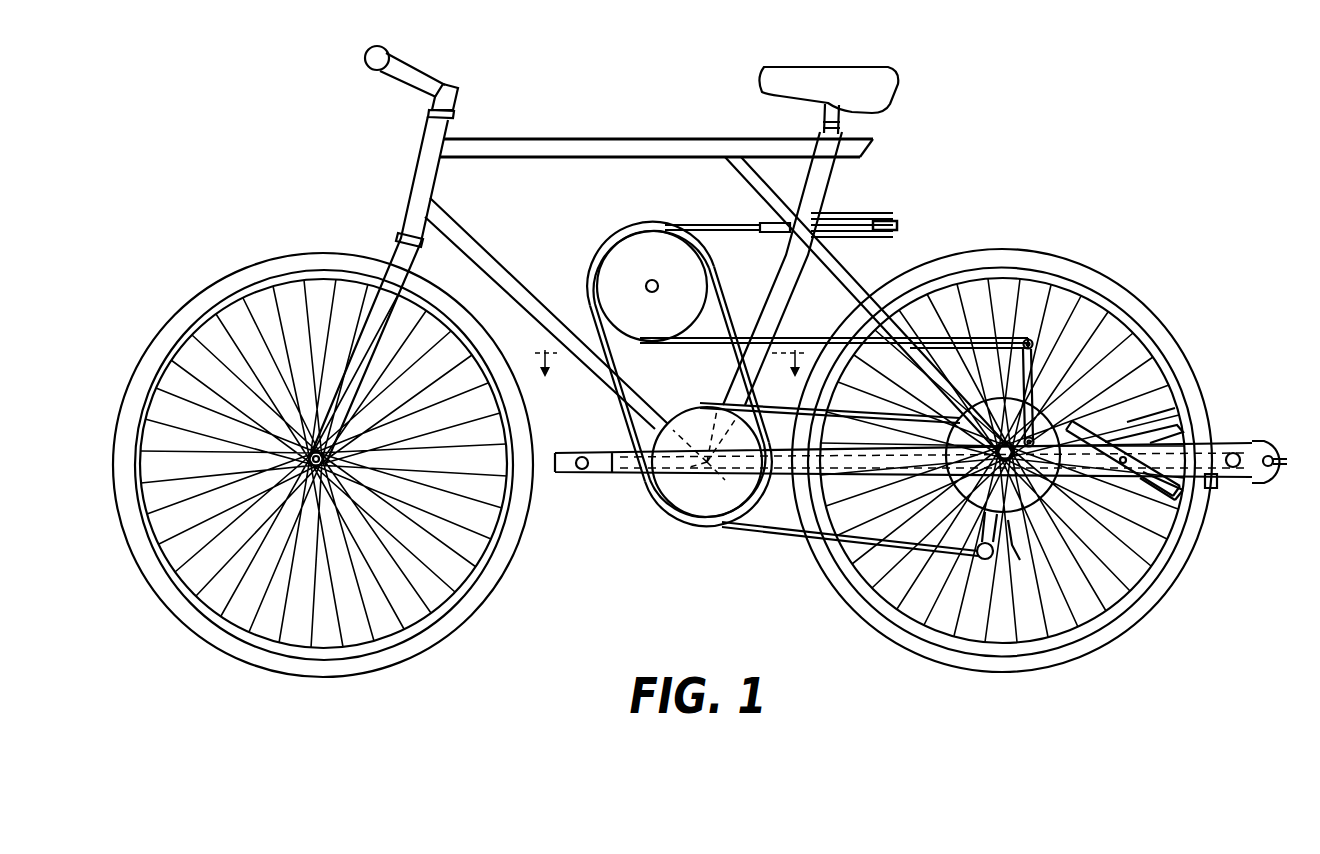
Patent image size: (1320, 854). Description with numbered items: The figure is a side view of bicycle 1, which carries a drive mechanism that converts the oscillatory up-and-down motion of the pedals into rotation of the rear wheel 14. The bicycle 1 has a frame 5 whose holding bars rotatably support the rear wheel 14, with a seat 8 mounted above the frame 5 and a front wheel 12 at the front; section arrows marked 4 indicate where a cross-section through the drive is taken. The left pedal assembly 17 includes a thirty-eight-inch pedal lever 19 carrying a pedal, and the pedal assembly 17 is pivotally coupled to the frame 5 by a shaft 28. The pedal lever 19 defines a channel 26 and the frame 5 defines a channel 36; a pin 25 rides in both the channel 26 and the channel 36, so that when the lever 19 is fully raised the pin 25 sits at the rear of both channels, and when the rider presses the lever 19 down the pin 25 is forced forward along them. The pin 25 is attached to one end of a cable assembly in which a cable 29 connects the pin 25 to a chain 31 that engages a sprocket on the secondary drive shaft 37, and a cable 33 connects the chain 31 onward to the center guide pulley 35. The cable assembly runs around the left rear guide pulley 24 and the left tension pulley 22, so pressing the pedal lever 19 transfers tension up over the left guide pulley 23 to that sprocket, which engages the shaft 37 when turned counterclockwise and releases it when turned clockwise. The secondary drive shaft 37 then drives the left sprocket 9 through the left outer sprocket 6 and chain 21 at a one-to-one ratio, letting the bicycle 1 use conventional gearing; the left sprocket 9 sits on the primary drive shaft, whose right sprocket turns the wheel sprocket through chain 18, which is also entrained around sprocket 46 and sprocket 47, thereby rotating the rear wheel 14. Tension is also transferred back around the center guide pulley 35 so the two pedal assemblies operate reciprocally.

The bicycle 1 is at (677, 614).
The section line 4- 4 is at (671, 372).
The frame 5 is at (508, 274).
The left outer sprocket 6 is at (629, 286).
The seat 8 is at (899, 88).
The left sprocket 9 is at (703, 406).
The front wheel 12 is at (224, 283).
The rear wheel 14 is at (1092, 271).
The left pedal assembly 17 is at (903, 479).
The chain 18 is at (880, 407).
The pedal lever 19 is at (636, 475).
The chain 21 is at (612, 243).
The left tension pulley 22 is at (1040, 414).
The left guide pulley 23 is at (1029, 338).
The left rear guide pulley 24 is at (1277, 483).
The pin 25 is at (1120, 432).
The channel 26 is at (1160, 493).
The shaft 28 is at (1234, 453).
The cable 29 is at (812, 337).
The chain 31 is at (720, 223).
The cable 33 is at (838, 224).
The center guide pulley 35 is at (895, 219).
The channel 36 is at (1042, 480).
The secondary drive shaft 37 is at (655, 280).
The sprocket 46 is at (1005, 545).
The sprocket 47 is at (987, 560).